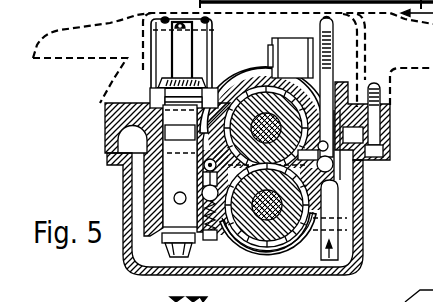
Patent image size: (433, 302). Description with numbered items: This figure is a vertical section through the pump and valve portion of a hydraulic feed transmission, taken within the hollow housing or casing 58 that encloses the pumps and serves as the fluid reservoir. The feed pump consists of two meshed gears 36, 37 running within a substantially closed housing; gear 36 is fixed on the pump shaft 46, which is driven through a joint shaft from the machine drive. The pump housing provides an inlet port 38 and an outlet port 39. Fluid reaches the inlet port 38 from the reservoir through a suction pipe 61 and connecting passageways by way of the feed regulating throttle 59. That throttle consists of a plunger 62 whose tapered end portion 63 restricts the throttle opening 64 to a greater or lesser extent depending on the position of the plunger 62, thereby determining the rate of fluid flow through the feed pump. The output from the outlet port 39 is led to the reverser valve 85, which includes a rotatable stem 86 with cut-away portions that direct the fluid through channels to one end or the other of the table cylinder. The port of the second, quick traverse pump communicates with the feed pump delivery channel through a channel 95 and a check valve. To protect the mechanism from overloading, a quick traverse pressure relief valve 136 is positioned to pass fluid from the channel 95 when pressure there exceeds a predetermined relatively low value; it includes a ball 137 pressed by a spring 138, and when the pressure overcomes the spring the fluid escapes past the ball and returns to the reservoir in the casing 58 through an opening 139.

The pump gear 36 is at (276, 262).
The pump gear 37 is at (243, 84).
The inlet port 38 is at (338, 220).
The outlet port 39 is at (213, 153).
The pump shaft 46 is at (252, 248).
The housing or casing 58 is at (136, 268).
The feed regulating throttle 59 is at (373, 145).
The suction pipe 61 is at (334, 233).
The plunger 62 is at (349, 88).
The tapered end portion 63 is at (352, 127).
The throttle opening 64 is at (366, 166).
The reverser valve 85 is at (163, 163).
The rotatable stem 86 is at (170, 233).
The channel 95 is at (180, 166).
The quick traverse pressure relief valve 136 is at (208, 241).
The ball 137 is at (177, 250).
The spring 138 is at (190, 257).
The opening 139 is at (207, 242).